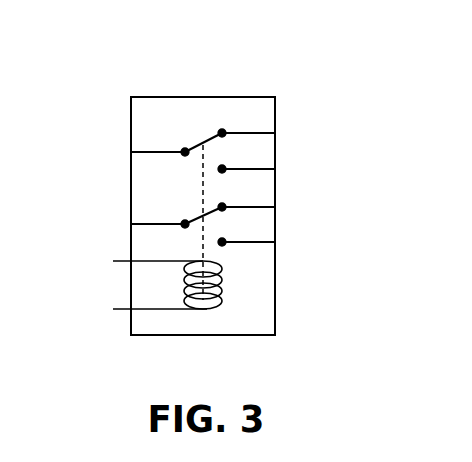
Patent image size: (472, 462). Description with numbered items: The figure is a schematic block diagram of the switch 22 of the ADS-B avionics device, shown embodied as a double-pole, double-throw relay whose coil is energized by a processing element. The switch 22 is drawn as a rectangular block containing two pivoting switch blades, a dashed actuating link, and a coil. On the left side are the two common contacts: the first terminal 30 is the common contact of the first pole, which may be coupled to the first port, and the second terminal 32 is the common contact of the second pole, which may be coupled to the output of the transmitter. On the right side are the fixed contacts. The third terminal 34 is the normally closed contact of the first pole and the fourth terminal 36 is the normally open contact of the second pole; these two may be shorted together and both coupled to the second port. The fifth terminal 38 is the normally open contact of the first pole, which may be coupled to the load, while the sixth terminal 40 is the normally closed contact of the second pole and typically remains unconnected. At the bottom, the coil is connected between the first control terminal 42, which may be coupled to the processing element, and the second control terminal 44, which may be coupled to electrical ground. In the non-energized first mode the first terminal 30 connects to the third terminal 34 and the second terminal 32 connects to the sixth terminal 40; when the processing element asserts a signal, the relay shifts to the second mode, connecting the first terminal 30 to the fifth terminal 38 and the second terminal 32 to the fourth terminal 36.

The switch 22 is at (187, 58).
The first terminal 30 is at (123, 218).
The second terminal 32 is at (123, 151).
The third terminal 34 is at (280, 206).
The fourth terminal 36 is at (280, 167).
The fifth terminal 38 is at (280, 241).
The sixth terminal 40 is at (280, 134).
The first control terminal 42 is at (112, 259).
The second control terminal 44 is at (112, 309).